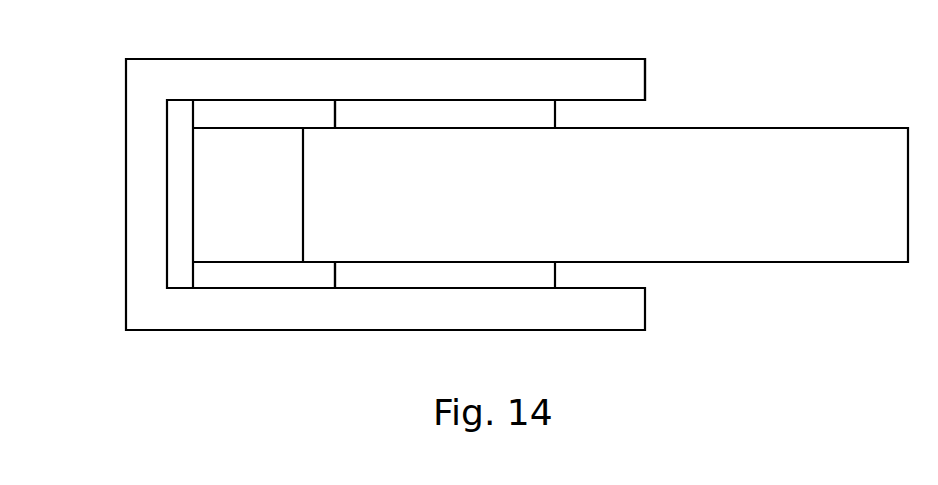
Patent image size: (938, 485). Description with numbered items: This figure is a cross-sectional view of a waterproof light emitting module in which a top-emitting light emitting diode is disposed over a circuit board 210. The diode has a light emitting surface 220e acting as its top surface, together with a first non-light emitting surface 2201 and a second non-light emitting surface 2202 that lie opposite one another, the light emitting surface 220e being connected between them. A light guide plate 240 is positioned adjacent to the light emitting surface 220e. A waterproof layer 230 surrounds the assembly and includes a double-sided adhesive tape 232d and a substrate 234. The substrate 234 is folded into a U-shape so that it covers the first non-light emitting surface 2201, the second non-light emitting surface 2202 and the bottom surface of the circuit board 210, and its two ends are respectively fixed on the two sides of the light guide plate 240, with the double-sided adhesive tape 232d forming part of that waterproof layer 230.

The circuit board 210 is at (177, 183).
The light emitting surface 220e is at (311, 174).
The first non-light emitting surface 2201 is at (256, 263).
The second non-light emitting surface 2202 is at (239, 126).
The waterproof layer 230 is at (725, 40).
The double-sided adhesive tape 232d is at (520, 112).
The substrate 234 is at (600, 67).
The light guide plate 240 is at (813, 245).